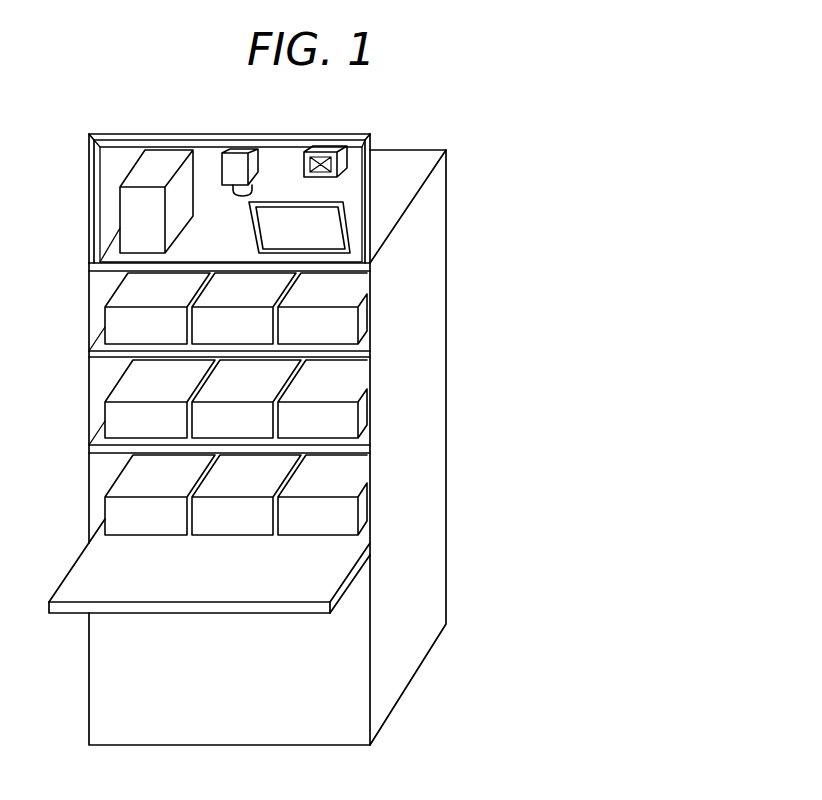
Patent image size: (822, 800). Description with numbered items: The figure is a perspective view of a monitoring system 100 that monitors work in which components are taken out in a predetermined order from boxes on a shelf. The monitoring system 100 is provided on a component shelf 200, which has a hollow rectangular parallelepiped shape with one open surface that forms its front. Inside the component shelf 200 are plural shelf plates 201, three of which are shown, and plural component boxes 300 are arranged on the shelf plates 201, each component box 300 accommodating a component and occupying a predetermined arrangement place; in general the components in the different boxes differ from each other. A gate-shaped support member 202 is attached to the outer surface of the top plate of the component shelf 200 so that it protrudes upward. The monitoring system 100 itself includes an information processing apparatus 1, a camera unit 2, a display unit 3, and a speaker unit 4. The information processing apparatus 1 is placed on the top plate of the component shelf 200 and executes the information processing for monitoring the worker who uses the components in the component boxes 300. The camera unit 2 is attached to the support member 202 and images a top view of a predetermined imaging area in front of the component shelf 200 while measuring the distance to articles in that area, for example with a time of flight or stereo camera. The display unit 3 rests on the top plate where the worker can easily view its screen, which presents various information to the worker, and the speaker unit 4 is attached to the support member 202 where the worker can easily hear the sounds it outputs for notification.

The monitoring system 100 is at (490, 150).
The component shelf 200 is at (430, 652).
The shelf plate 201 is at (368, 346).
The support member 202 is at (89, 167).
The component box 300 is at (105, 327).
The information processing apparatus 1 is at (160, 158).
The camera unit 2 is at (256, 158).
The display unit 3 is at (348, 225).
The speaker unit 4 is at (348, 160).